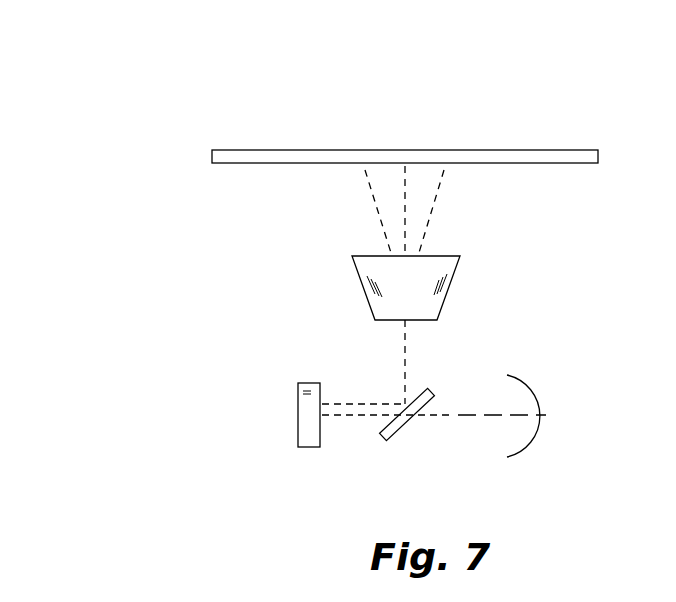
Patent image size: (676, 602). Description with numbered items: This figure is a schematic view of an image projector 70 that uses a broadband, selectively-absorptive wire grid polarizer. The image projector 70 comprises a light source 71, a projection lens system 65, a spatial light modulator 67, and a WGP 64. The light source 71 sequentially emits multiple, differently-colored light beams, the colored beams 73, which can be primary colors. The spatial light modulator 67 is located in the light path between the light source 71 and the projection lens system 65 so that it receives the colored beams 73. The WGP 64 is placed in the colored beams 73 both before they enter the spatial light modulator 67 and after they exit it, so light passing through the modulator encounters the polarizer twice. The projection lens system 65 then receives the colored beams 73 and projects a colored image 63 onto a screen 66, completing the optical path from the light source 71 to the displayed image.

The image projector 70 is at (126, 119).
The screen 66 is at (385, 157).
The colored image 63 is at (437, 198).
The projection lens system 65 is at (421, 296).
The spatial light modulator 67 is at (308, 442).
The wire grid polarizer (WGP) 64 is at (388, 432).
The colored beams 73 is at (470, 418).
The light source 71 is at (548, 411).